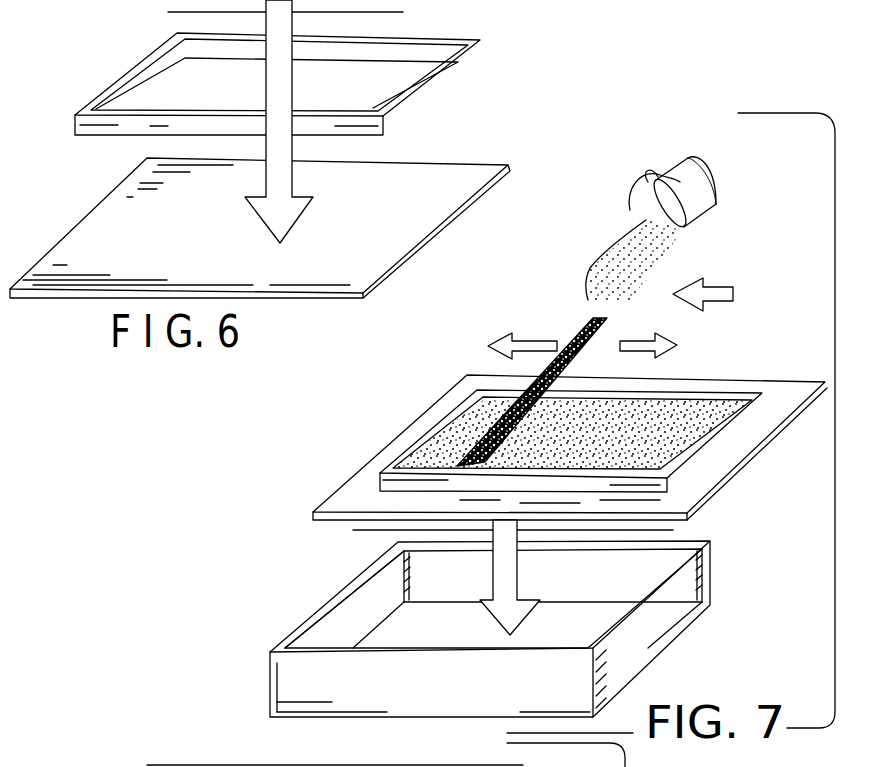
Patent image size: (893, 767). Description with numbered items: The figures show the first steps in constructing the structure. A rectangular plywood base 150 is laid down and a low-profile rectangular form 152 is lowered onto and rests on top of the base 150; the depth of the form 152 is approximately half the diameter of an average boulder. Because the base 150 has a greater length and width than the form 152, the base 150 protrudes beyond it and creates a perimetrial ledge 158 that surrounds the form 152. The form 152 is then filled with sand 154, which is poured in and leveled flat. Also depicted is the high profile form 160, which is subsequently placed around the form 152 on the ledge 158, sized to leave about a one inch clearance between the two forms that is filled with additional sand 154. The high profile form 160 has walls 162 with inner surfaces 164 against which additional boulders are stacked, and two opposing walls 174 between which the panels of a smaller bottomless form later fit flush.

In FIG. 6, the plywood base 150 is at (408, 253).
In FIG. 7, the plywood base 150 is at (687, 492).
In FIG. 6, the low-profile rectangular form 152 is at (423, 95).
In FIG. 7, the low-profile rectangular form 152 is at (717, 438).
In FIG. 7, the sand 154 is at (600, 251).
In FIG. 7, the perimetrial ledge 158 is at (782, 393).
In FIG. 7, the high profile form 160 is at (645, 648).
In FIG. 7, the walls 162 is at (312, 617).
In FIG. 7, the inner surfaces 164 is at (348, 617).
In FIG. 7, the opposing walls 174 is at (587, 567).